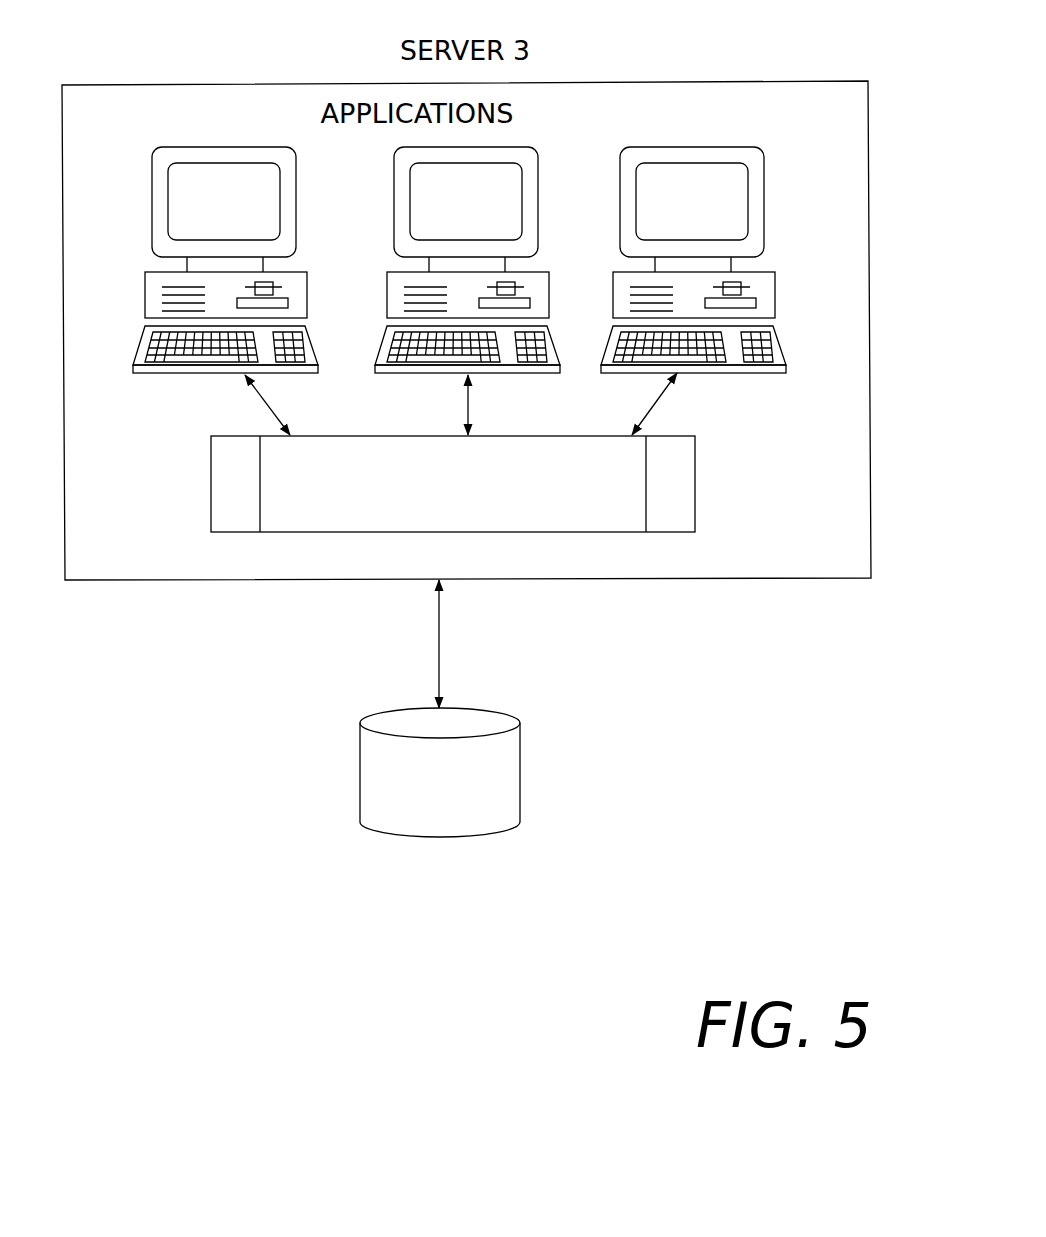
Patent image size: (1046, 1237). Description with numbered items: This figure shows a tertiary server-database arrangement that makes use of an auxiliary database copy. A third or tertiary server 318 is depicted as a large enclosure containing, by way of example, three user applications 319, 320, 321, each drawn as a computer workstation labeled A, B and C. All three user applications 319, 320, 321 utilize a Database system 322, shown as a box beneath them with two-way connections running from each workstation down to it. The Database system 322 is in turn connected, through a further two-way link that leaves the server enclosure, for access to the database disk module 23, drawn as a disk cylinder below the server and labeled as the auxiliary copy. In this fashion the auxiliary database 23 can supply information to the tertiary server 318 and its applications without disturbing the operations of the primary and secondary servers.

The tertiary server 318 is at (853, 80).
The user application 319 is at (175, 148).
The user application 320 is at (530, 147).
The user application 321 is at (755, 193).
The database system 322 is at (695, 480).
The database disk module 23 is at (485, 708).